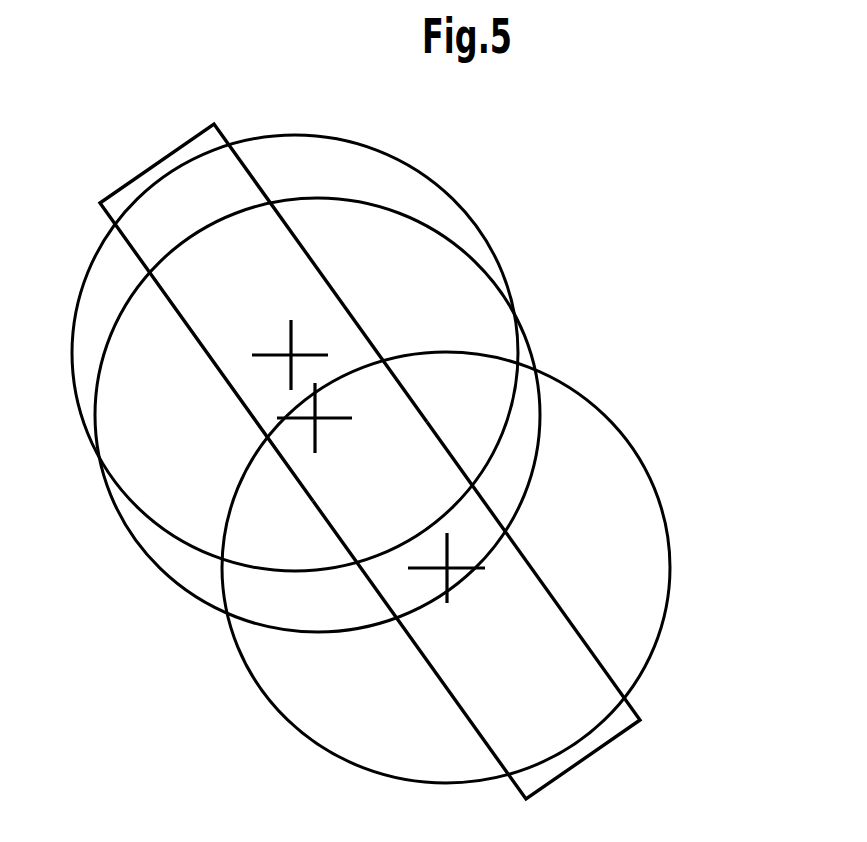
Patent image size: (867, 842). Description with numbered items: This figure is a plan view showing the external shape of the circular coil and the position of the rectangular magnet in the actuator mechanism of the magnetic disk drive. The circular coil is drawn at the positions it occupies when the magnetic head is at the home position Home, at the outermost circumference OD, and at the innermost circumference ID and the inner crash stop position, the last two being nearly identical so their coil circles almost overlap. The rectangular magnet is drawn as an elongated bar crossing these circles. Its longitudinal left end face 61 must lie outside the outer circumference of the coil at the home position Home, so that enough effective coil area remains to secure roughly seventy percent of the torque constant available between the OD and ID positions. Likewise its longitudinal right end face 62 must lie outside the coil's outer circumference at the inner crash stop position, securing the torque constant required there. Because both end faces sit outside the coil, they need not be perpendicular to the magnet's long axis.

The longitudinal left end face 61 is at (158, 162).
The longitudinal right end face 62 is at (572, 767).
The home position Home is at (307, 341).
The outermost circumference OD is at (351, 415).
The innermost circumference ID is at (527, 567).